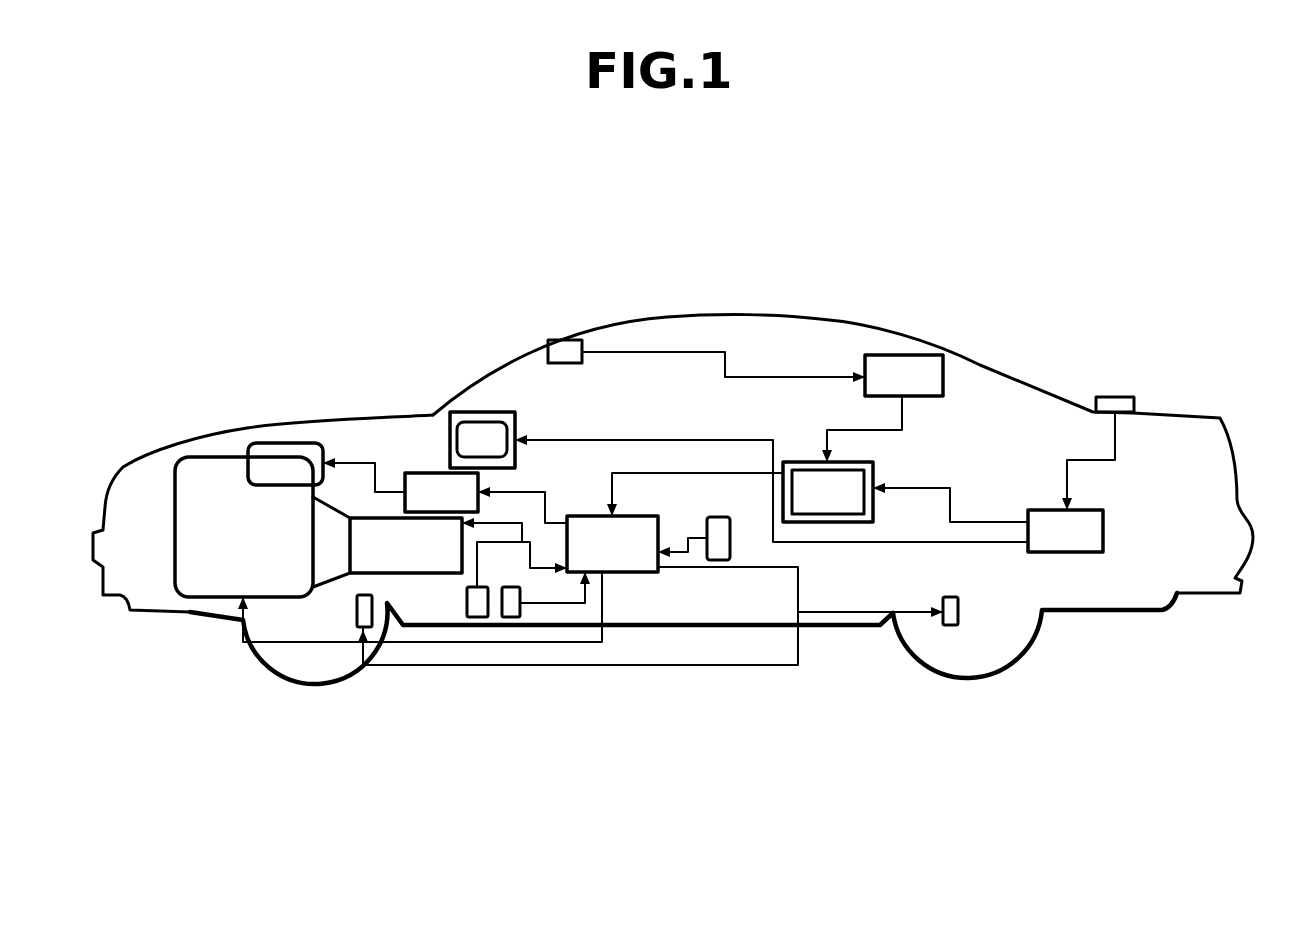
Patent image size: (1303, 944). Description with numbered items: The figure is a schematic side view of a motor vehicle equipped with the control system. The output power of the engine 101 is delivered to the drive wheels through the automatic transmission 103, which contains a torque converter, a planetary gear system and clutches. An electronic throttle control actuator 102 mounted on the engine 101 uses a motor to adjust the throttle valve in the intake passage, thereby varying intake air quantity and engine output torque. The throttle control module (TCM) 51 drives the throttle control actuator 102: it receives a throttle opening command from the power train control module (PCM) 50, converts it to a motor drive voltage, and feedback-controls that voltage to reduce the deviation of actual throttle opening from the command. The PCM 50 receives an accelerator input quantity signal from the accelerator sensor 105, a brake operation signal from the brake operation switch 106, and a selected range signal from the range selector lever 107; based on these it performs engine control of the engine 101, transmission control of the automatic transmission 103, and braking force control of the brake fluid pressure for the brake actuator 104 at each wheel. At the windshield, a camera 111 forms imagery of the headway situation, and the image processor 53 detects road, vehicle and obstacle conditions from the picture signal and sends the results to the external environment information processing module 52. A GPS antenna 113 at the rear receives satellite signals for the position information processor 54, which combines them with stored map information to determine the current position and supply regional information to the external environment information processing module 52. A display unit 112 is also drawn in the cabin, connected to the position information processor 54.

The power train control module (PCM) 50 is at (620, 572).
The throttle control module (TCM) 51 is at (428, 473).
The external environment information processing module 52 is at (838, 522).
The image processor 53 is at (902, 355).
The position information processor 54 is at (1080, 545).
The engine 101 is at (192, 580).
The electronic throttle control actuator 102 is at (275, 453).
The automatic transmission 103 is at (417, 575).
The brake actuator 104 is at (358, 622).
The accelerator sensor 105 is at (480, 617).
The brake operation switch 106 is at (510, 617).
The range selector lever 107 is at (720, 560).
The camera 111 is at (565, 340).
The display unit 112 is at (478, 412).
The GPS antenna 113 is at (1113, 397).